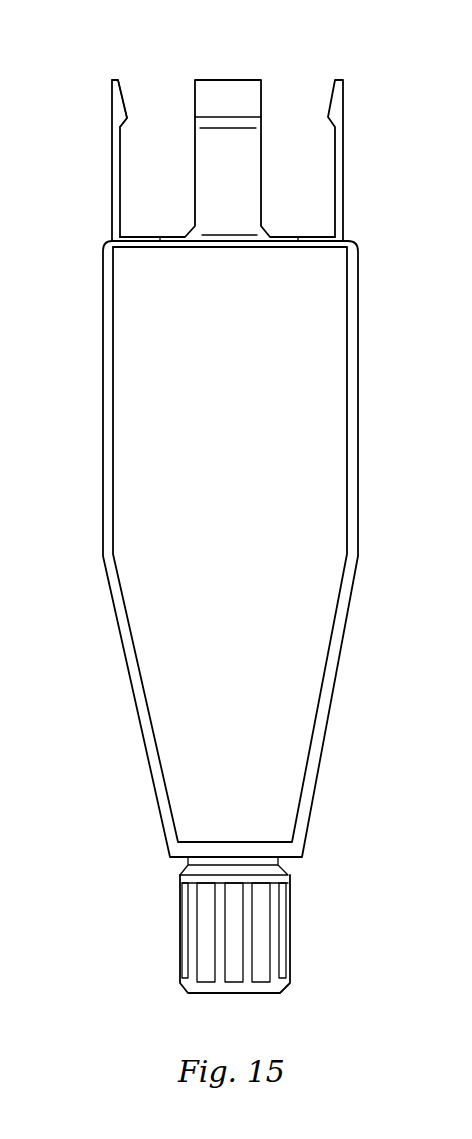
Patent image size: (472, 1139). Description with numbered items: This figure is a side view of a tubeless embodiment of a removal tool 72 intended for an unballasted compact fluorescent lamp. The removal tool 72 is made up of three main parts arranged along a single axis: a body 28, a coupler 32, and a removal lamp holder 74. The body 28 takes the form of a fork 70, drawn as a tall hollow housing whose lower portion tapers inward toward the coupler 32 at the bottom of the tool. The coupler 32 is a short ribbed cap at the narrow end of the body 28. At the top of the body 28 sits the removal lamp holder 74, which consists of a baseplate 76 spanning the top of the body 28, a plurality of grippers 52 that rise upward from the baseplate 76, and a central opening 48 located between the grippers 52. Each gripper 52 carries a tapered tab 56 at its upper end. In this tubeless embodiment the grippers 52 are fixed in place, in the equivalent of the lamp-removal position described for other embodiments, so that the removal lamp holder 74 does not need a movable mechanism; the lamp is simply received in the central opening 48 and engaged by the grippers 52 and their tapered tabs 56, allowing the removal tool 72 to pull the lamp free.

The removal tool 72 is at (335, 26).
The body 28 is at (372, 393).
The fork 70 is at (108, 430).
The baseplate 76 is at (170, 243).
The central opening 48 is at (231, 265).
The grippers 52 is at (112, 187).
The tapered tabs 56 is at (119, 92).
The removal lamp holder 74 is at (354, 166).
The coupler 32 is at (290, 948).